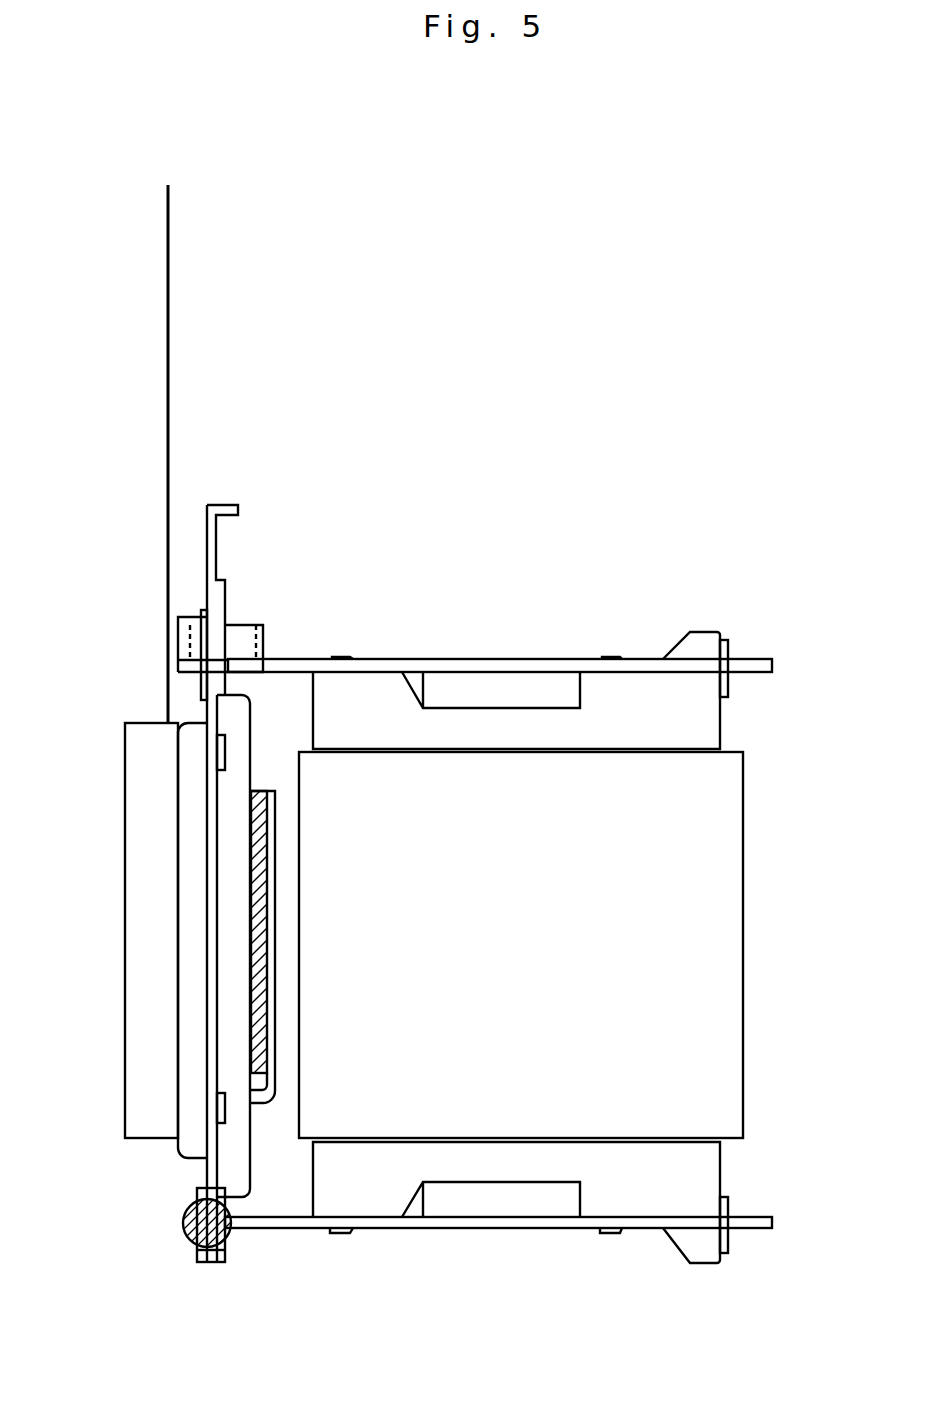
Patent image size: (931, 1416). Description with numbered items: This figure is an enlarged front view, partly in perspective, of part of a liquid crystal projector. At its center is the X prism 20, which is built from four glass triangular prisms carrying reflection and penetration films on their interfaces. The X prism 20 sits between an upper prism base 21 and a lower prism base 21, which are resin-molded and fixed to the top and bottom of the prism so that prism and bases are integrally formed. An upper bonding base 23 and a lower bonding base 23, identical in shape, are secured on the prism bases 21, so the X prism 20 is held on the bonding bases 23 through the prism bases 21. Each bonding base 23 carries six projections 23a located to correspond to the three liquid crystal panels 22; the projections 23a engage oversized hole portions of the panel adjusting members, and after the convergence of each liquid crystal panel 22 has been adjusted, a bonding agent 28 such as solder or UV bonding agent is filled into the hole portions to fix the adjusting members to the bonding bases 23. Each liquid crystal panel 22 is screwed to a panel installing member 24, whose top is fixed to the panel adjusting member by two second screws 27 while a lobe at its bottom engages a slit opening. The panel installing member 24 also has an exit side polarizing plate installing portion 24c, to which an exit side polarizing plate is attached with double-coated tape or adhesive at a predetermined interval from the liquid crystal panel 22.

The X prism 20 is at (702, 900).
The prism base 21 is at (690, 733).
The liquid crystal panel 22 is at (148, 1123).
The bonding base 23 is at (560, 658).
The projection 23a is at (242, 657).
The panel installing member 24 is at (192, 1150).
The exit side polarizing plate installing portion 24c is at (260, 1107).
The second screw 27 is at (188, 625).
The bonding agent 28 is at (262, 790).